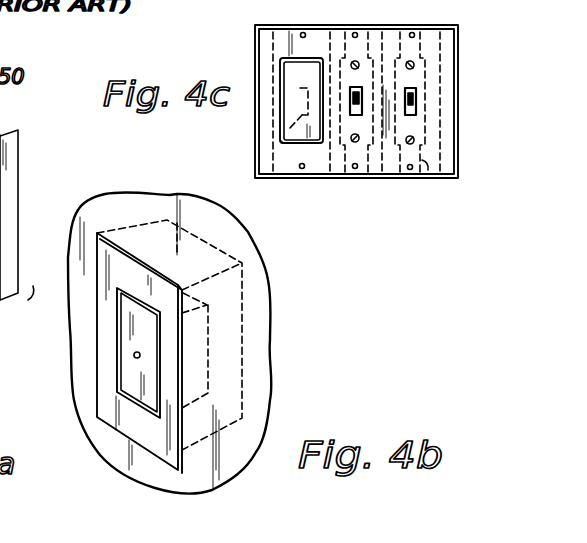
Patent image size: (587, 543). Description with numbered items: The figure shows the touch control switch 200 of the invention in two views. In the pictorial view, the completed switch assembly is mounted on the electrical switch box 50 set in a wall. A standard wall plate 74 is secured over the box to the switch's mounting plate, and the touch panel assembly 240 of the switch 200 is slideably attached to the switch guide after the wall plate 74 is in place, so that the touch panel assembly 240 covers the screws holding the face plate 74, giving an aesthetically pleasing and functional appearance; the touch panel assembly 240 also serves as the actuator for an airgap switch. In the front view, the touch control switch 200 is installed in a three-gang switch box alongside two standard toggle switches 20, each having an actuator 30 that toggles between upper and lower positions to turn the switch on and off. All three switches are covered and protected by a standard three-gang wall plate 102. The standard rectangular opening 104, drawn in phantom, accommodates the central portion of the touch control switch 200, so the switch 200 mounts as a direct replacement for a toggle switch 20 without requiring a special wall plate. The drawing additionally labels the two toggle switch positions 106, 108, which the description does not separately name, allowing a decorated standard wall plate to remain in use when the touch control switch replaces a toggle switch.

In FIG. 4C, the toggle switch 20 is at (345, 150).
In FIG. 4C, the actuator 30 is at (361, 115).
In FIG. 4B, the electrical switch box 50 is at (243, 300).
In FIG. 4B, the wall plate 74 is at (121, 244).
In FIG. 4C, the three-gang wall plate 102 is at (295, 26).
In FIG. 4C, the standard rectangular opening 104 is at (282, 142).
In FIG. 4C, the first toggle switch 106 is at (356, 87).
In FIG. 4C, the second toggle switch 108 is at (411, 88).
In FIG. 4C, the touch control switch 200 is at (270, 108).
In FIG. 4B, the touch control switch 200 is at (208, 352).
In FIG. 4C, the touch panel assembly 240 is at (290, 77).
In FIG. 4B, the touch panel assembly 240 is at (135, 357).